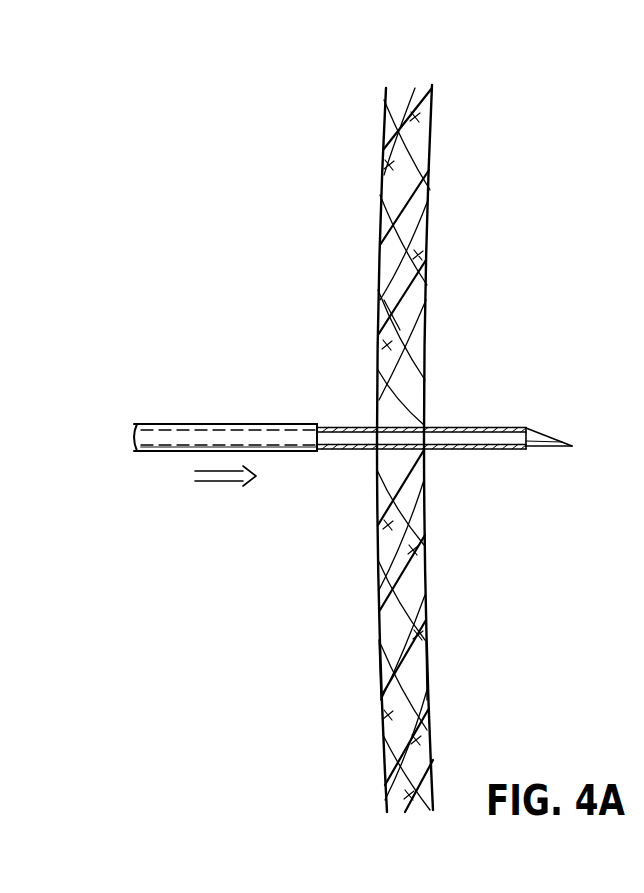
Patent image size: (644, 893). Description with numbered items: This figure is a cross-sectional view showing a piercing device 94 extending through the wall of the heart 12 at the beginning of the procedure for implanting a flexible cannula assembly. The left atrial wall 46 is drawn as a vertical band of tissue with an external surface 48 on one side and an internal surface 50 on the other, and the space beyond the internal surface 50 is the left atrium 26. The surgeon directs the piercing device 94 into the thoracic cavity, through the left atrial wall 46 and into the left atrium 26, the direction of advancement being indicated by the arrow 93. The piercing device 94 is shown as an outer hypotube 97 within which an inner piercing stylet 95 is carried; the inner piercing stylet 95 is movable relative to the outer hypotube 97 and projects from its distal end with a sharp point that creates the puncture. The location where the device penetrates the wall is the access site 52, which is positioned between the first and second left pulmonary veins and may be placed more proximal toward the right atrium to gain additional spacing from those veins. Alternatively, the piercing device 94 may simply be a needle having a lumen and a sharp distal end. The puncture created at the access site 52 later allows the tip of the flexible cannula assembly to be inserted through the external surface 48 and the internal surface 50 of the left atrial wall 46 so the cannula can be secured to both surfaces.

The heart 12 is at (360, 185).
The left atrial wall 46 is at (387, 305).
The external surface 48 is at (380, 672).
The internal surface 50 is at (428, 672).
The access site 52 is at (423, 397).
The outer hypotube 97 is at (227, 423).
The inner piercing stylet 95 is at (547, 431).
The piercing device 94 is at (551, 447).
The arrow 93 is at (226, 487).
The left atrium 26 is at (598, 559).